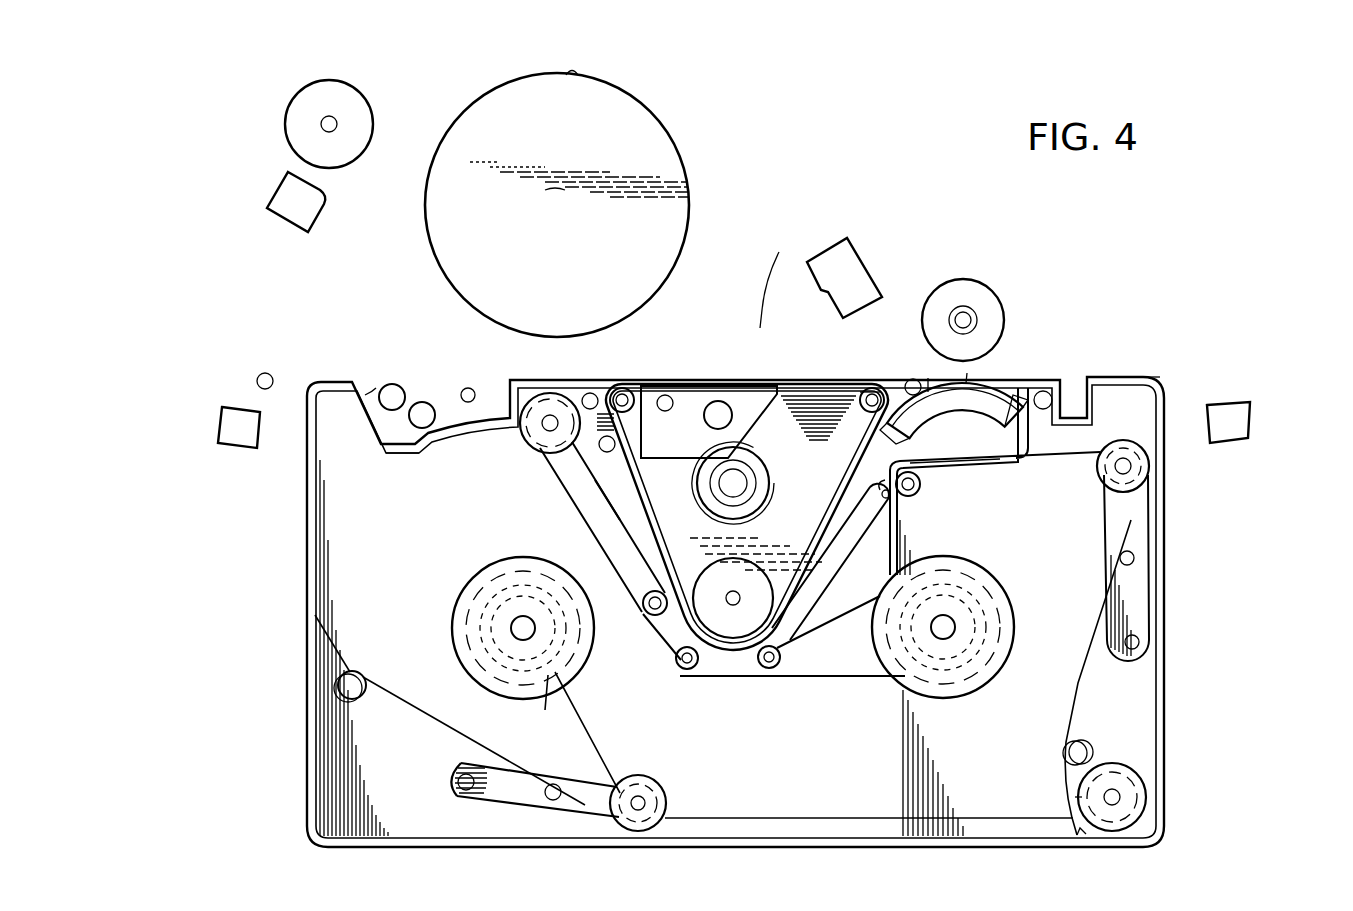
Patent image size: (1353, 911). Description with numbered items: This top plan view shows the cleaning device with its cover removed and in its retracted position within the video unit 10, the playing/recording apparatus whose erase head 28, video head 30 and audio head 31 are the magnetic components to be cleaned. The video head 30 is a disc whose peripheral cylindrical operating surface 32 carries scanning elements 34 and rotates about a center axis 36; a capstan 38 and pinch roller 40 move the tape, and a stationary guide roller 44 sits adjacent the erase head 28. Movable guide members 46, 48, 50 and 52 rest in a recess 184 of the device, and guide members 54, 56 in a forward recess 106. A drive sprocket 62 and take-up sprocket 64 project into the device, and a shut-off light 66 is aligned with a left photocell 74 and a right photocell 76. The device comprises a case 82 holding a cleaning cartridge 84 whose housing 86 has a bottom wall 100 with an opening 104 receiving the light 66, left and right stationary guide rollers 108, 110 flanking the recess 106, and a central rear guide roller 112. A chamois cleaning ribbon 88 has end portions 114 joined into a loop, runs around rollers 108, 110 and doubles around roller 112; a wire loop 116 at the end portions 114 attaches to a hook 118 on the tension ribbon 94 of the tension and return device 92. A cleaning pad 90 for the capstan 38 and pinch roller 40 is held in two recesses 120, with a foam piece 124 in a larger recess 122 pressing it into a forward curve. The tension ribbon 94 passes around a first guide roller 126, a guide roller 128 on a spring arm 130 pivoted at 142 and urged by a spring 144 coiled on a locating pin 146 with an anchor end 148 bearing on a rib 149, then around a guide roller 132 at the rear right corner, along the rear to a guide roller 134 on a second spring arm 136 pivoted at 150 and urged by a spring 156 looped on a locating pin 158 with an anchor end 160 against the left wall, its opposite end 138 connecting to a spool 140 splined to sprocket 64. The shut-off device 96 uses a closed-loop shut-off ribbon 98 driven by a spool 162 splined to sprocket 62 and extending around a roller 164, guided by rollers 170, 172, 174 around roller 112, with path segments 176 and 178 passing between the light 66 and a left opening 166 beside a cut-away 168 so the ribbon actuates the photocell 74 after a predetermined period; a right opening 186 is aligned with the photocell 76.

The video unit 10 is at (878, 157).
The erase head 28 is at (278, 195).
The video head 30 is at (632, 104).
The audio head 31 is at (850, 257).
The peripheral cylindrically shaped operating surface 32 is at (688, 155).
The scanning elements 34 is at (575, 70).
The center axis 36 is at (558, 208).
The capstan 38 is at (913, 378).
The pinch roller 40 is at (973, 290).
The second stationary guide roller 44 is at (352, 96).
The guide member 46 is at (255, 381).
The guide member 48 is at (392, 384).
The guide member 50 is at (422, 402).
The guide member 52 is at (470, 388).
The guide member 54 is at (705, 382).
The guide member 56 is at (704, 388).
The first drive sprocket 62 is at (990, 590).
The second take-up sprocket 64 is at (505, 565).
The shut-off light 66 is at (733, 482).
The left photocell 74 is at (210, 432).
The right photocell 76 is at (1237, 422).
The case 82 is at (1164, 533).
The cleaning cartridge 84 is at (771, 284).
The housing 86 is at (824, 378).
The cleaning ribbon 88 is at (752, 385).
The cleaning pad 90 is at (975, 380).
The tension and return device 92 is at (1089, 528).
The tension ribbon 94 is at (1065, 457).
The shut-off device 96 is at (802, 695).
The shut-off ribbon 98 is at (848, 680).
The bottom wall 100 is at (840, 515).
The opening 104 is at (730, 500).
The forward recess 106 is at (667, 395).
The left stationary guide roller 108 is at (623, 388).
The right stationary guide roller 110 is at (855, 402).
The guide roller 112 is at (745, 575).
The end portions 114 is at (828, 555).
The wire loop 116 is at (890, 495).
The hook 118 is at (880, 490).
The recesses 120 is at (1000, 390).
The recess 122 is at (930, 460).
The compressible foam piece 124 is at (928, 378).
The first guide roller 126 is at (915, 492).
The guide roller 128 is at (1148, 468).
The spring arm 130 is at (1133, 590).
The guide roller 132 is at (1142, 808).
The third guide roller 134 is at (668, 803).
The second spring arm 136 is at (507, 795).
The opposite end 138 is at (572, 732).
The spool 140 is at (470, 597).
The pivot 142 is at (1140, 642).
The spring 144 is at (1077, 684).
The locating pin 146 is at (1063, 755).
The anchor end 148 is at (1068, 800).
The rib 149 is at (1088, 832).
The pivot 150 is at (447, 790).
The spring 156 is at (400, 690).
The locating pin 158 is at (362, 700).
The anchor end 160 is at (360, 635).
The spool 162 is at (975, 578).
The roller 164 is at (548, 393).
The through opening 166 is at (305, 437).
The cut away portion 168 is at (380, 450).
The guide roller 170 is at (770, 670).
The guide roller 172 is at (685, 672).
The guide roller 174 is at (640, 622).
The first path segment 176 is at (550, 480).
The second path segment 178 is at (597, 507).
The recess 184 is at (365, 397).
The right opening 186 is at (1159, 420).